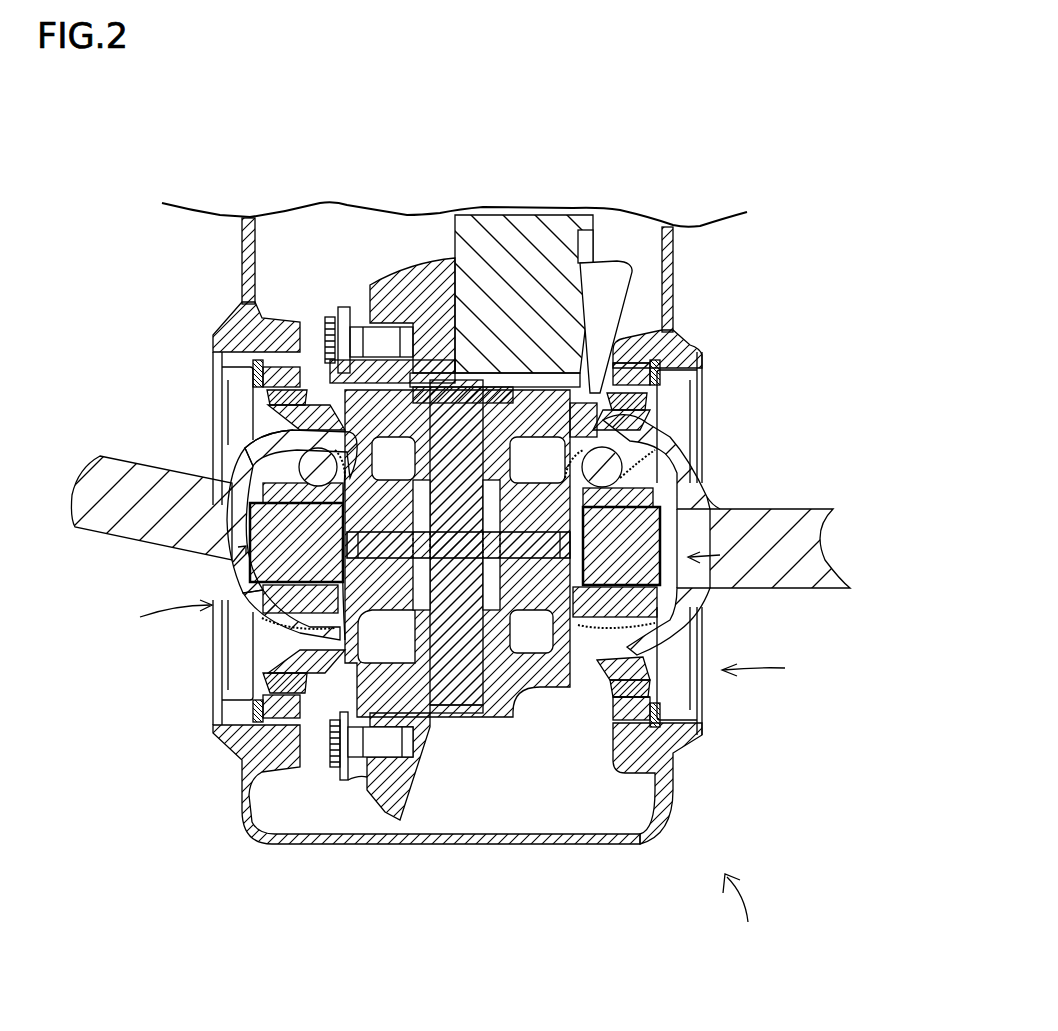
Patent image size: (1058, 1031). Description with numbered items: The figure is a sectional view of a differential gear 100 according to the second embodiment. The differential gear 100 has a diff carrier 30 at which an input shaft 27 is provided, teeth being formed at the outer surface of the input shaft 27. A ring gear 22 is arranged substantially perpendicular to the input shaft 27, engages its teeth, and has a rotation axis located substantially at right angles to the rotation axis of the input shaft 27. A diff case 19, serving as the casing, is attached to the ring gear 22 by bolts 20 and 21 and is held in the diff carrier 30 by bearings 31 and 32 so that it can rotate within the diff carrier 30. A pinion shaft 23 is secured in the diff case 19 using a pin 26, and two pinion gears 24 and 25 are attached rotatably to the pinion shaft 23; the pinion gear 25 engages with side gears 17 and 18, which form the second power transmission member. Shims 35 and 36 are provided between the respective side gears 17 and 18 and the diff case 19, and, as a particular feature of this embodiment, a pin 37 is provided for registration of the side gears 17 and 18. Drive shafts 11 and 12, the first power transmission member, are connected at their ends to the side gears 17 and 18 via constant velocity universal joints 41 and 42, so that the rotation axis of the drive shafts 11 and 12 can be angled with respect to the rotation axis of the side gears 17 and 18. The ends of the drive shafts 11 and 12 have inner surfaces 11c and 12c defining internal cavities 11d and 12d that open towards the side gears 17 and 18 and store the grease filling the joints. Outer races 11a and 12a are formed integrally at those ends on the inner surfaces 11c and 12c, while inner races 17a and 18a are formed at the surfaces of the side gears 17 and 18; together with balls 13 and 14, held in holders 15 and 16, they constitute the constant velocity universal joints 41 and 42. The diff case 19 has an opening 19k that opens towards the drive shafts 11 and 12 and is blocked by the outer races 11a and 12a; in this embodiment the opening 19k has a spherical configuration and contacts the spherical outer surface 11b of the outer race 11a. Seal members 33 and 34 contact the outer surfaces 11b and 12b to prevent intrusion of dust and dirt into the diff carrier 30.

The drive shaft 11 is at (120, 478).
The outer race 11a is at (263, 437).
The outer surface 11b is at (235, 428).
The inner surface 11c is at (230, 550).
The internal cavity 11d is at (237, 583).
The drive shaft 12 is at (815, 533).
The outer race 12a is at (655, 437).
The outer surface 12b is at (670, 485).
The inner surface 12c is at (702, 500).
The internal cavity 12d is at (695, 585).
The ball 13 is at (310, 470).
The ball 14 is at (598, 390).
The holder 15 is at (232, 630).
The holder 16 is at (673, 640).
The side gear 17 is at (345, 612).
The inner race 17a is at (327, 413).
The side gear 18 is at (625, 575).
The inner race 18a is at (672, 450).
The diff case 19 is at (357, 780).
The opening 19k is at (272, 667).
The bolt 20 is at (334, 768).
The bolt 21 is at (333, 307).
The ring gear 22 is at (400, 820).
The pinion shaft 23 is at (468, 690).
The pinion gear 24 is at (410, 665).
The pinion gear 25 is at (407, 337).
The pin 26 is at (495, 392).
The input shaft 27 is at (551, 232).
The diff carrier 30 is at (533, 838).
The bearing 31 is at (320, 405).
The bearing 32 is at (627, 372).
The seal member 33 is at (236, 447).
The seal member 34 is at (668, 462).
The shim 35 is at (263, 690).
The shim 36 is at (640, 615).
The pin 37 is at (452, 400).
The constant velocity universal joint 41 is at (171, 589).
The constant velocity universal joint 42 is at (771, 669).
The differential gear 100 is at (772, 955).